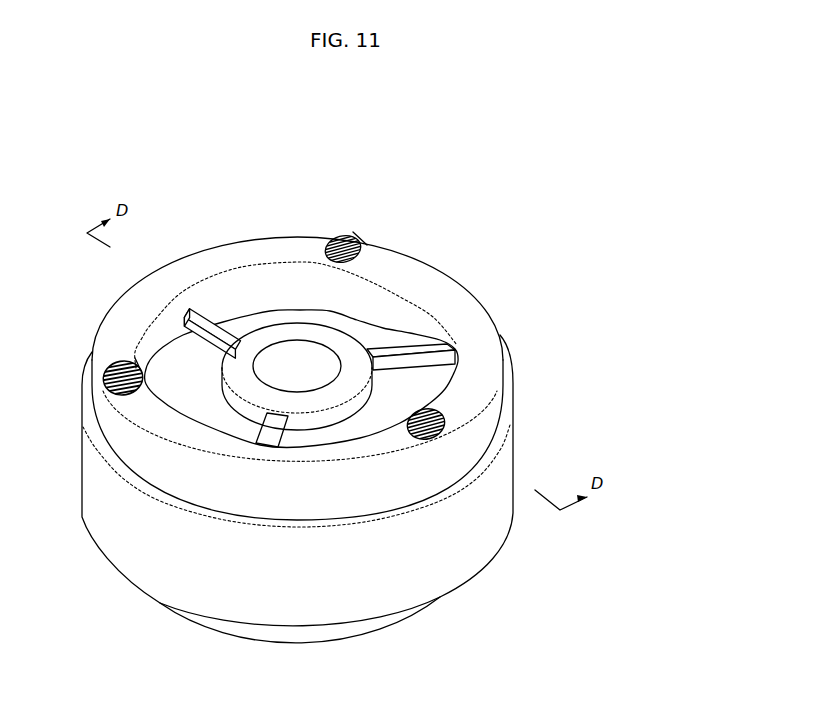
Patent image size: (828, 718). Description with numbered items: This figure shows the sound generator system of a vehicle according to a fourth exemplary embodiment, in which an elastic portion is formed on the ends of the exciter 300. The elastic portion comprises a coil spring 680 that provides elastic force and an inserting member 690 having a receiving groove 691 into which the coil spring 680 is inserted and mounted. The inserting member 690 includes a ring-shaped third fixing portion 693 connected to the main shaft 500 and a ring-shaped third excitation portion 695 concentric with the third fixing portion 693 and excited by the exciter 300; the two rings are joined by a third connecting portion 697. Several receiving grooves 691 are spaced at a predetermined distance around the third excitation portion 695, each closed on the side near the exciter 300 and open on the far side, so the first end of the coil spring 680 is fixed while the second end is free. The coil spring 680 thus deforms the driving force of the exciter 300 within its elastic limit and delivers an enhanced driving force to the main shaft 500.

The exciter 300 is at (527, 433).
The main shaft 500 is at (297, 360).
The coil spring 680 is at (345, 232).
The inserting member 690 is at (465, 260).
The receiving groove 691 is at (365, 247).
The third fixing portion 693 is at (347, 343).
The third excitation portion 695 is at (230, 253).
The third connecting portion 697 is at (203, 313).